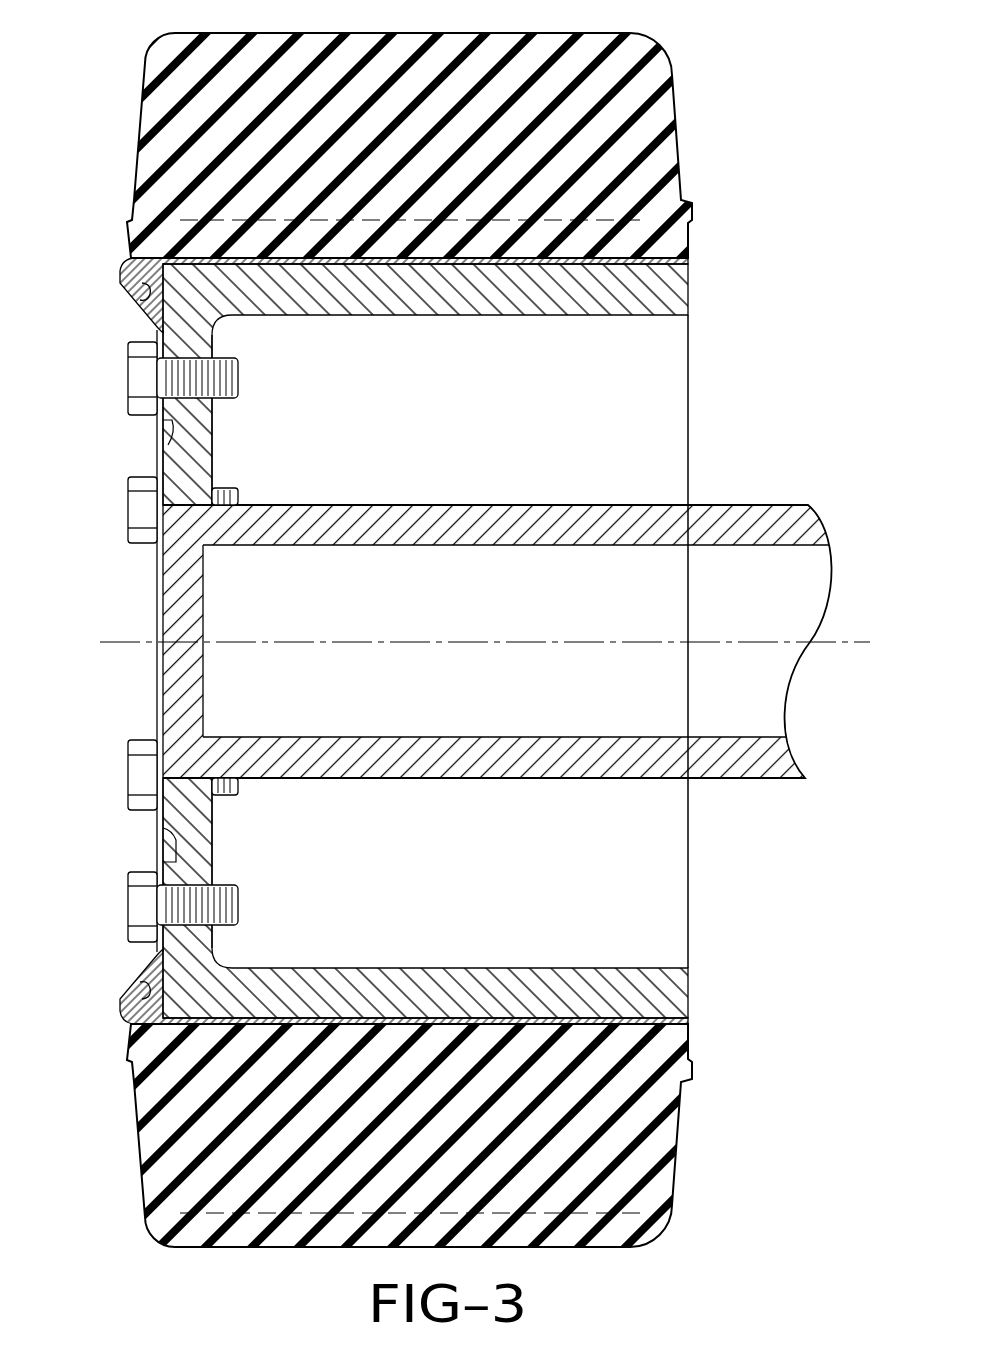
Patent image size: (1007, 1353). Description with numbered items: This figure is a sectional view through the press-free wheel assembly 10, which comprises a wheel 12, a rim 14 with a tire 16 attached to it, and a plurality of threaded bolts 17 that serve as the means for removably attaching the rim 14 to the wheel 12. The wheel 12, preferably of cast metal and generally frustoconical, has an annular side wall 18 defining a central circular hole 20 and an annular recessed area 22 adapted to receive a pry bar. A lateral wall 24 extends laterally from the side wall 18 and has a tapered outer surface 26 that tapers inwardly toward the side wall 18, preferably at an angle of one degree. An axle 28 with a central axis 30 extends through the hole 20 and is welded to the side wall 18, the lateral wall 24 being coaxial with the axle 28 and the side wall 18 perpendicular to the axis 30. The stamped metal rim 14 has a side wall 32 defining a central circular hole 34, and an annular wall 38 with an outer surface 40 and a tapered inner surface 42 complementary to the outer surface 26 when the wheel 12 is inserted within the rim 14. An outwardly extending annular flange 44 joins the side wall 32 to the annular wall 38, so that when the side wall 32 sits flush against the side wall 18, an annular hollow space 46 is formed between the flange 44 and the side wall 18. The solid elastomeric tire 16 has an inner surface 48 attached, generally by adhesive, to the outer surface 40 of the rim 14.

The wheel assembly 10 is at (486, 623).
The wheel 12 is at (484, 641).
The rim 14 is at (116, 265).
The tire 16 is at (691, 147).
The bolts 17 is at (136, 379).
The side wall 18 is at (193, 468).
The central circular hole 20 is at (174, 641).
The recessed area 22 is at (170, 852).
The lateral wall 24 is at (628, 318).
The tapered outer surface 26 is at (394, 619).
The axle 28 is at (460, 607).
The central axis 30 is at (141, 640).
The side wall 32 is at (163, 858).
The central circular hole 34 is at (164, 428).
The annular wall 38 is at (202, 248).
The outer surface 40 is at (237, 248).
The tapered inner surface 42 is at (303, 266).
The annular flange 44 is at (124, 281).
The annular hollow space 46 is at (142, 306).
The inner surface 48 is at (377, 264).